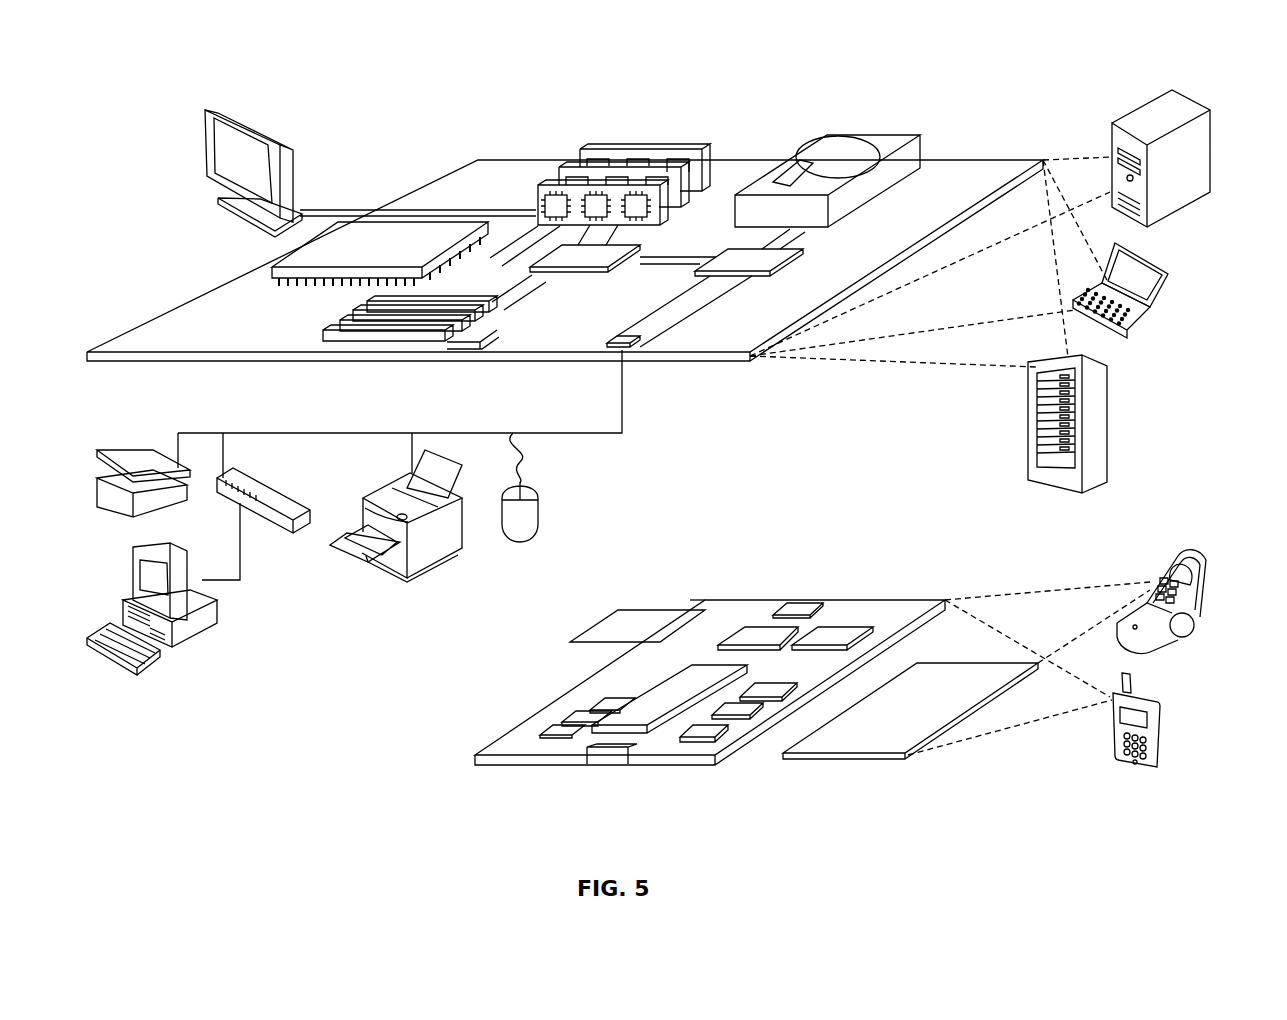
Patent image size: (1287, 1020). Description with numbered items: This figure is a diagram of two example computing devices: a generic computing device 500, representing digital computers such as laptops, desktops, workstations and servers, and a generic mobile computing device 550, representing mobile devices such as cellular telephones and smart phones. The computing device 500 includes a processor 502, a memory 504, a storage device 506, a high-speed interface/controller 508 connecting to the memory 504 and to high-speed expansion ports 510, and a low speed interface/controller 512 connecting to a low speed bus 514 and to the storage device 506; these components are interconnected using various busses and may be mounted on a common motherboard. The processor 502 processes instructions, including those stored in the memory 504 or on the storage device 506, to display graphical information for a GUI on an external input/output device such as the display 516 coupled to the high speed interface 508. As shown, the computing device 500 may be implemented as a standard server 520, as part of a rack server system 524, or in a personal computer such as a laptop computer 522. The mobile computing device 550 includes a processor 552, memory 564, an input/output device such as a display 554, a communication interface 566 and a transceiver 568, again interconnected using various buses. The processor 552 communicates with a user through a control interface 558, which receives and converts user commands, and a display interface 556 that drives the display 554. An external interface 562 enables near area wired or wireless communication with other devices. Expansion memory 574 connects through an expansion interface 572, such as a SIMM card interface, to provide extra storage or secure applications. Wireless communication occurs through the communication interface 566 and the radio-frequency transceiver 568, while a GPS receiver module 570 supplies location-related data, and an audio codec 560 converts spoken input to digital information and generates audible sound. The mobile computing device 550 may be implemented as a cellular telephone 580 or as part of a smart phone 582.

The computing device 500 is at (326, 74).
The processor 502 is at (272, 267).
The memory 504 is at (612, 148).
The storage device 506 is at (822, 138).
The high-speed interface/controller 508 is at (612, 262).
The high-speed expansion ports 510 is at (350, 322).
The low speed interface/controller 512 is at (740, 252).
The low speed bus 514 is at (630, 337).
The display 516 is at (213, 106).
The standard server 520 is at (1112, 142).
The laptop computer 522 is at (1152, 262).
The rack server system 524 is at (1028, 437).
The mobile computing device 550 is at (474, 740).
The processor 552 is at (647, 722).
The display 554 is at (888, 748).
The display interface 556 is at (714, 740).
The control interface 558 is at (762, 712).
The audio codec 560 is at (797, 690).
The external interface 562 is at (594, 750).
The memory 564 is at (570, 712).
The communication interface 566 is at (760, 632).
The transceiver 568 is at (835, 634).
The GPS receiver module 570 is at (805, 604).
The expansion interface 572 is at (697, 605).
The expansion memory 574 is at (640, 612).
The cellular telephone 580 is at (1205, 556).
The smart phone 582 is at (1112, 725).